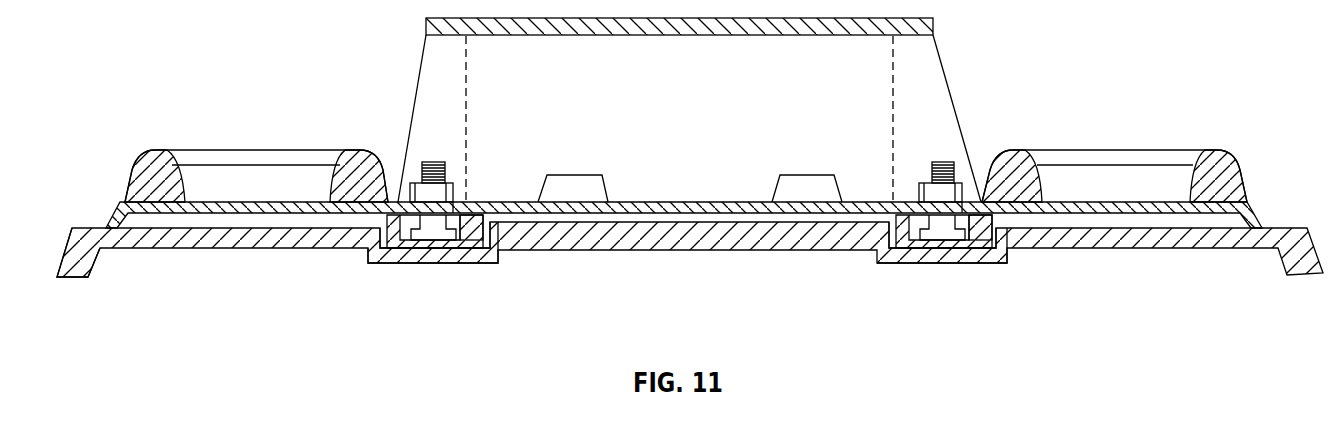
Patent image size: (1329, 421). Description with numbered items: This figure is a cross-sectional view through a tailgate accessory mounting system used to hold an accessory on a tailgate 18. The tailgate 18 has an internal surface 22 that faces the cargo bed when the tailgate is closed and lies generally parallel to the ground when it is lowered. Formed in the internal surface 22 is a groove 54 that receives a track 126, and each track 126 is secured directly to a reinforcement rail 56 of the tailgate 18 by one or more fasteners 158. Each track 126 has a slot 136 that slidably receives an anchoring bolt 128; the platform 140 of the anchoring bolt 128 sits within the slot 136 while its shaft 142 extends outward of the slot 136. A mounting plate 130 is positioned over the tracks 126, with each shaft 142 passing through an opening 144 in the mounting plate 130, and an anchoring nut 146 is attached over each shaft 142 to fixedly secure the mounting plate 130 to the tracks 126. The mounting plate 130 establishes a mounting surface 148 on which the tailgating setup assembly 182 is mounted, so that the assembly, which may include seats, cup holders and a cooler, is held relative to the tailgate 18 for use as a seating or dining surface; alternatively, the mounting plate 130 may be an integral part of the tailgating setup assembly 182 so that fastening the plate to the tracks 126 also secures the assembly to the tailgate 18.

The tailgate 18 is at (82, 257).
The internal surface 22 is at (1105, 229).
The groove 54 is at (381, 236).
The reinforcement rail 56 is at (462, 256).
The track 126 is at (399, 237).
The anchoring bolt 128 is at (416, 176).
The mounting plate 130 is at (172, 212).
The slot 136 is at (458, 212).
The platform 140 is at (434, 248).
The shaft 142 is at (433, 161).
The opening 144 is at (456, 209).
The anchoring nut 146 is at (452, 196).
The mounting surface 148 is at (240, 200).
The fastener 158 is at (452, 246).
The tailgating setup assembly 182 is at (262, 149).